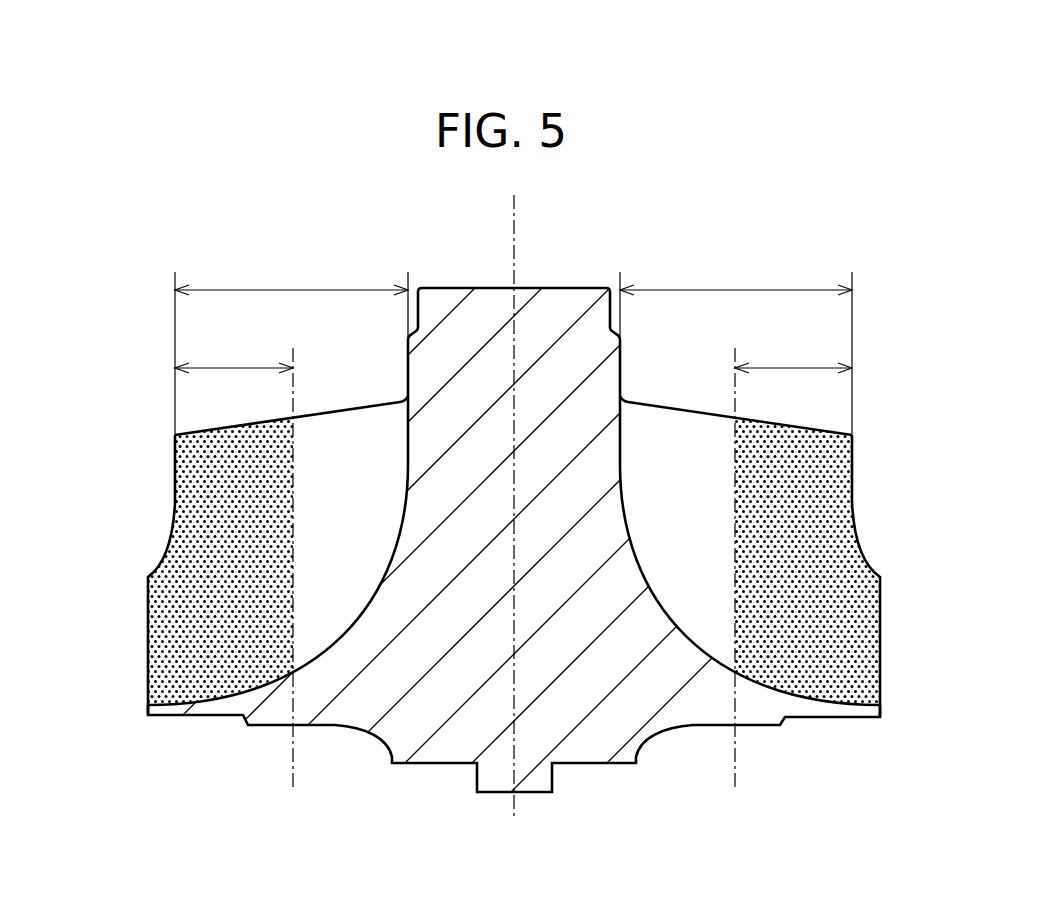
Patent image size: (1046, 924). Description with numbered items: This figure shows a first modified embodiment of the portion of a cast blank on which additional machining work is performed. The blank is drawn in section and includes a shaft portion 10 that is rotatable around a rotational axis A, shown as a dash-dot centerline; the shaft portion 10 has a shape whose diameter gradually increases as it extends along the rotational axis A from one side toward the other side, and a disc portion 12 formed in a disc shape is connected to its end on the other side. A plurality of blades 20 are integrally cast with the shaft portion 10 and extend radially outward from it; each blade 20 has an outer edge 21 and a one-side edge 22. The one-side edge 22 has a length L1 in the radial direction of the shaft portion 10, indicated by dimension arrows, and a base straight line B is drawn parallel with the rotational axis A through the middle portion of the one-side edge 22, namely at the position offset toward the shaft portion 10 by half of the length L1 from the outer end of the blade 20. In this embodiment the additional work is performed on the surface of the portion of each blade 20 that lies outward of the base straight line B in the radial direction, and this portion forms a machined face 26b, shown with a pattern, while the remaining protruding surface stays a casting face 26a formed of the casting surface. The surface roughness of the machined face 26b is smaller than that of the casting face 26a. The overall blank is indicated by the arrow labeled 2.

The impeller 2 is at (443, 257).
The shaft portion 10 is at (573, 305).
The disc portion 12 is at (847, 718).
The blade 20 is at (175, 436).
The outer edge 21 is at (172, 503).
The one-side edge 22 is at (340, 408).
The casting face 26a is at (345, 565).
The machined face 26b is at (178, 620).
The rotational axis A is at (517, 243).
The base straight line B is at (290, 757).
The length of the one-side edge L1 is at (797, 341).